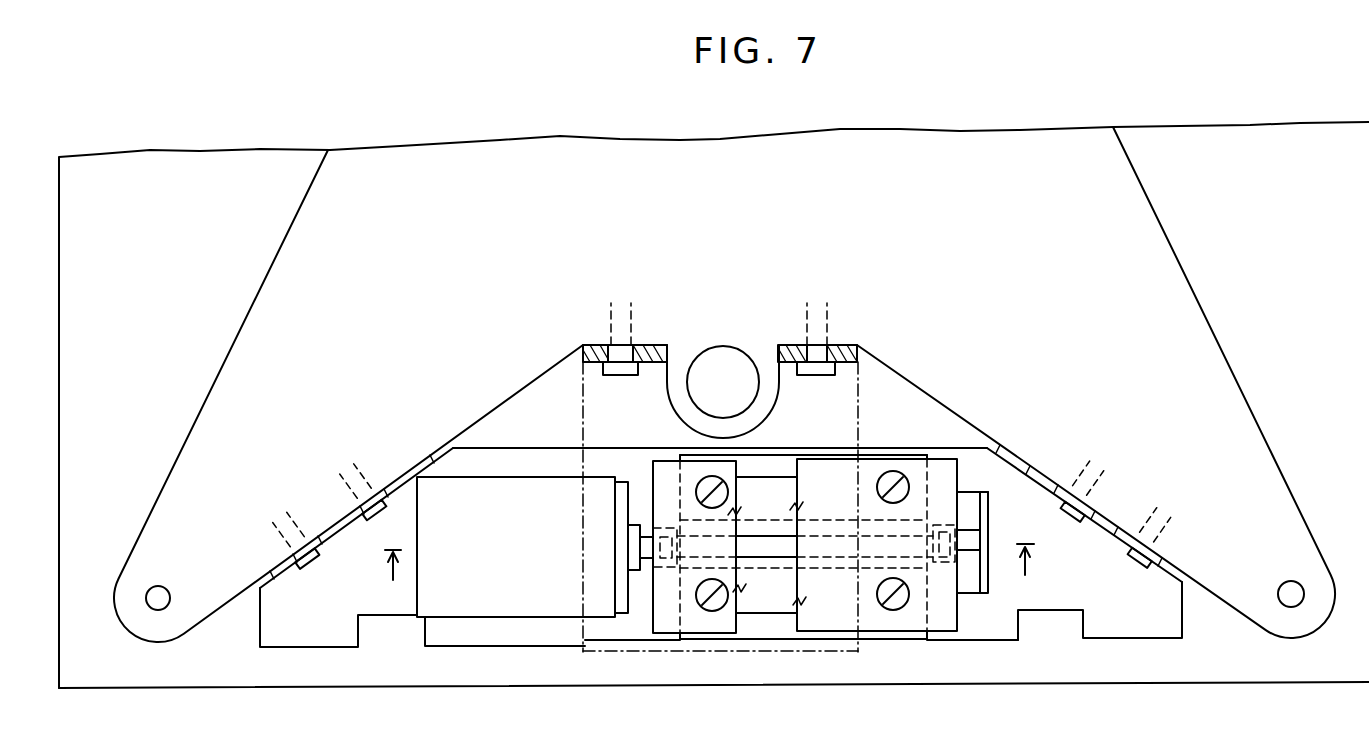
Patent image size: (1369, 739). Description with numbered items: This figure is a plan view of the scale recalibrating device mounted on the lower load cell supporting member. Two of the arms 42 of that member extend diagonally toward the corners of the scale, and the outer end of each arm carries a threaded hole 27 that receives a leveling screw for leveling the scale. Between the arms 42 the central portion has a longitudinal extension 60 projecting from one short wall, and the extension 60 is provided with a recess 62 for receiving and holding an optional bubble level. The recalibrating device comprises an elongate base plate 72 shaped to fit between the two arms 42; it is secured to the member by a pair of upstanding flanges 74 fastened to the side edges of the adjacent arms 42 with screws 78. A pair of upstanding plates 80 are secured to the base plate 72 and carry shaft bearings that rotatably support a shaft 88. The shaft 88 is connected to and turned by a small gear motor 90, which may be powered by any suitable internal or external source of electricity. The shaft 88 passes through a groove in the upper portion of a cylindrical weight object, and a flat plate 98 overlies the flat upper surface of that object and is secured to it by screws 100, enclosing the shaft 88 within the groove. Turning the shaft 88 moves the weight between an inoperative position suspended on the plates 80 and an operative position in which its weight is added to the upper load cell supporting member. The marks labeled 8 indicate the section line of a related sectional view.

The section line 8- 8 is at (709, 546).
The threaded holes 27 is at (158, 588).
The arms 42 is at (180, 466).
The longitudinal extension 60 is at (775, 398).
The recess 62 is at (741, 352).
The base plate 72 is at (350, 637).
The upstanding flanges 74 is at (333, 530).
The screws 78 is at (375, 523).
The upstanding plates 80 is at (628, 494).
The shaft 88 is at (772, 563).
The gear motor 90 is at (563, 597).
The flat plate 98 is at (980, 596).
The screws 100 is at (905, 603).